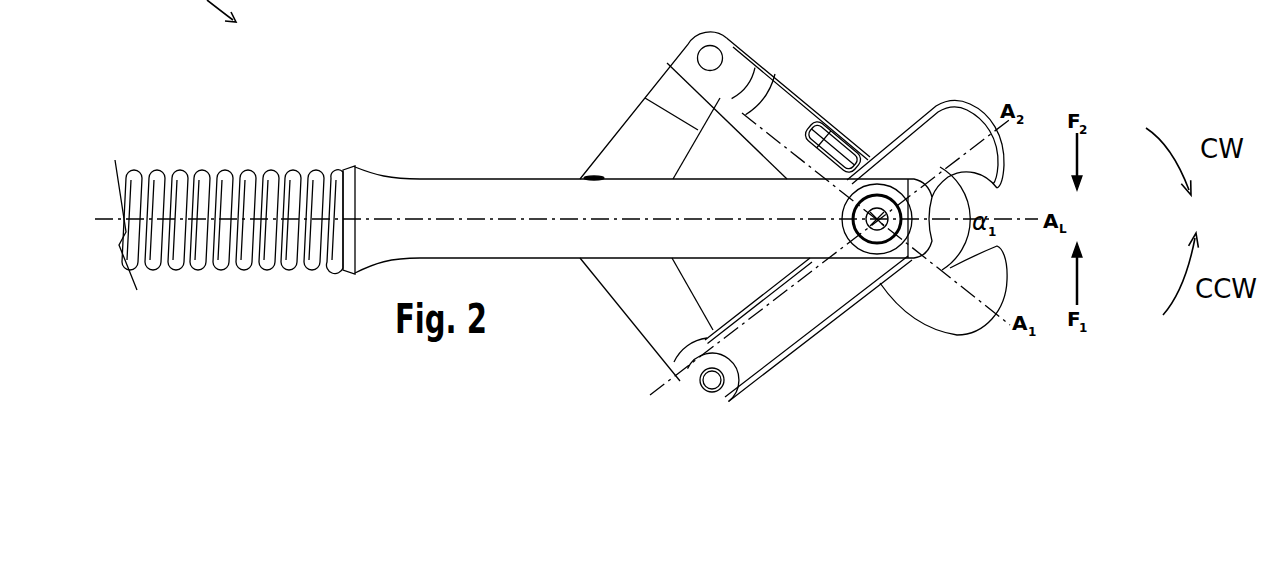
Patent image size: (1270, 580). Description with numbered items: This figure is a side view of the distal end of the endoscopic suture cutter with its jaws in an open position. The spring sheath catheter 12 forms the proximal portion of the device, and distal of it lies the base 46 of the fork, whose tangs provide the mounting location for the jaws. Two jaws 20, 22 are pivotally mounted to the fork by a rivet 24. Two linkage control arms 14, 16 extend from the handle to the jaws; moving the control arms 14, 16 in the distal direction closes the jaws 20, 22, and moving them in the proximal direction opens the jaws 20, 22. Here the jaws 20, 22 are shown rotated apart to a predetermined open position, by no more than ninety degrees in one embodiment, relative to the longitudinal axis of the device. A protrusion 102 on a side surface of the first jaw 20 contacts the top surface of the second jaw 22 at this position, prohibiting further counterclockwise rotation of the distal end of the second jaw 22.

The spring sheath catheter 12 is at (195, 170).
The base 46 is at (360, 166).
The linkage control arm 14 is at (632, 113).
The linkage control arm 16 is at (615, 307).
The protrusion 102 is at (804, 122).
The rivet 24 is at (823, 201).
The second jaw 22 is at (965, 102).
The first jaw 20 is at (957, 333).